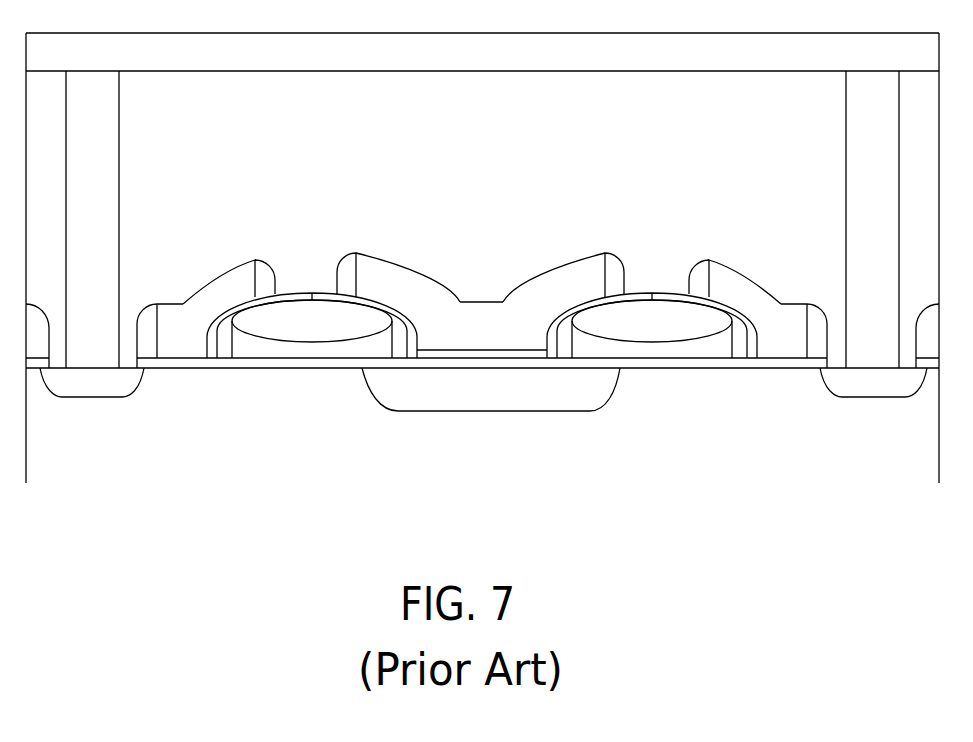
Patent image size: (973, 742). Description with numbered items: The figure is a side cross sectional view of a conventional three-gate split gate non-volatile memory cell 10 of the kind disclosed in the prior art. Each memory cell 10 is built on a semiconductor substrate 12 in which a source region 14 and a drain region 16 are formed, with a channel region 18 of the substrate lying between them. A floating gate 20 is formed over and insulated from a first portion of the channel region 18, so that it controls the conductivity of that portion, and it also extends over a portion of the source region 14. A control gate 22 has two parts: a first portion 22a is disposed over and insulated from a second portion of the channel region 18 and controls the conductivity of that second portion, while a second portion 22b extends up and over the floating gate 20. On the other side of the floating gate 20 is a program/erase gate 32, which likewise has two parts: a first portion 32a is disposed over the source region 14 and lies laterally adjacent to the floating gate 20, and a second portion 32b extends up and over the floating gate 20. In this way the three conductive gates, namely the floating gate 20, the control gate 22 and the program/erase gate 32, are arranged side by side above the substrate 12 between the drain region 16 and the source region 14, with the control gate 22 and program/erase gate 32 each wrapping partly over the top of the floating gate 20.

The memory cell 10 is at (341, 225).
The semiconductor substrate 12 is at (149, 472).
The source region 14 is at (501, 407).
The drain region 16 is at (103, 392).
The channel region 18 is at (287, 402).
The floating gate 20 is at (304, 351).
The control gate 22 is at (192, 294).
The first portion of control gate 22a is at (187, 350).
The second portion of control gate 22b is at (236, 282).
The program/erase gate 32 is at (449, 287).
The first portion of program/erase gate 32a is at (432, 338).
The second portion of program/erase gate 32b is at (371, 272).